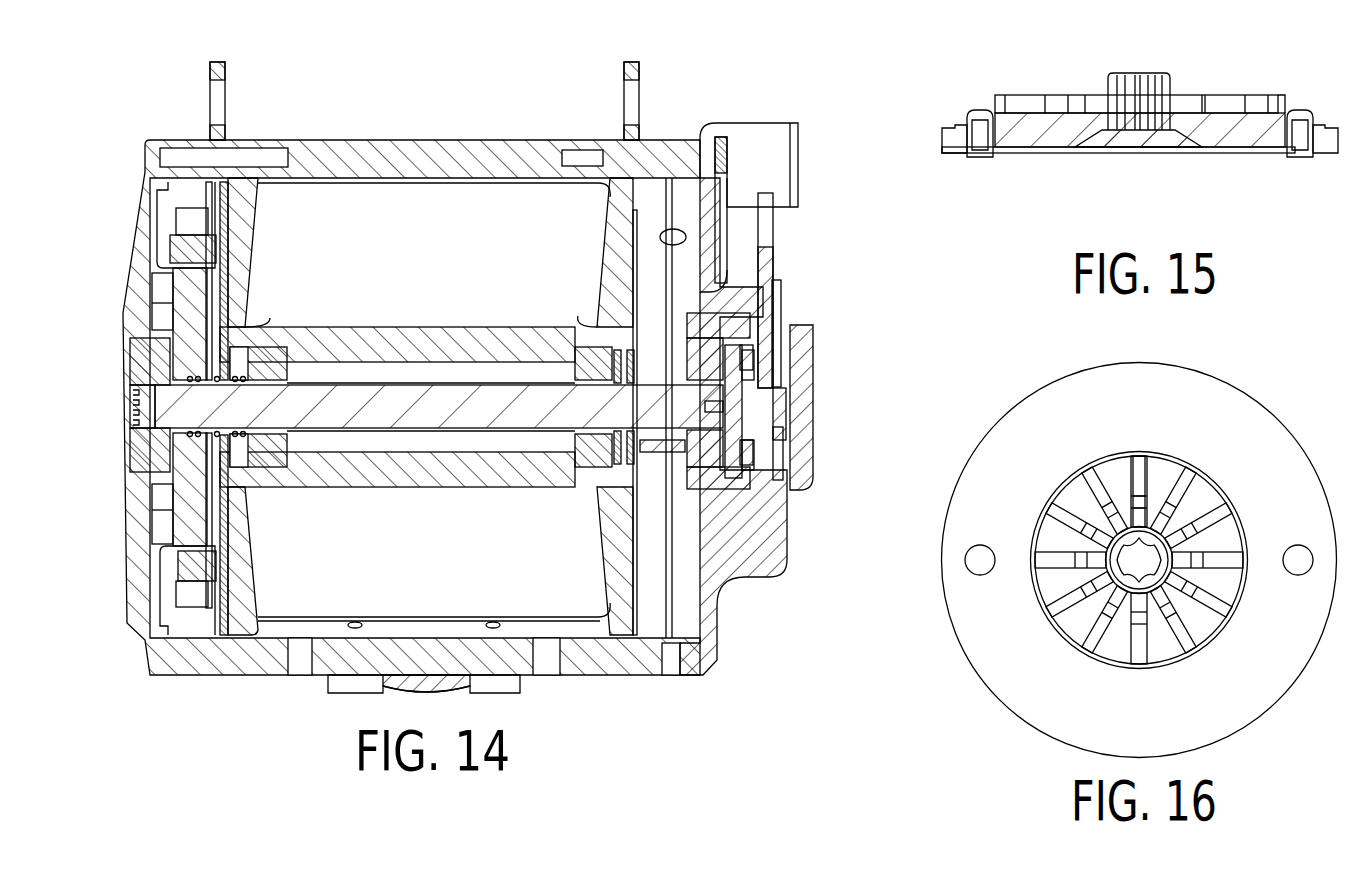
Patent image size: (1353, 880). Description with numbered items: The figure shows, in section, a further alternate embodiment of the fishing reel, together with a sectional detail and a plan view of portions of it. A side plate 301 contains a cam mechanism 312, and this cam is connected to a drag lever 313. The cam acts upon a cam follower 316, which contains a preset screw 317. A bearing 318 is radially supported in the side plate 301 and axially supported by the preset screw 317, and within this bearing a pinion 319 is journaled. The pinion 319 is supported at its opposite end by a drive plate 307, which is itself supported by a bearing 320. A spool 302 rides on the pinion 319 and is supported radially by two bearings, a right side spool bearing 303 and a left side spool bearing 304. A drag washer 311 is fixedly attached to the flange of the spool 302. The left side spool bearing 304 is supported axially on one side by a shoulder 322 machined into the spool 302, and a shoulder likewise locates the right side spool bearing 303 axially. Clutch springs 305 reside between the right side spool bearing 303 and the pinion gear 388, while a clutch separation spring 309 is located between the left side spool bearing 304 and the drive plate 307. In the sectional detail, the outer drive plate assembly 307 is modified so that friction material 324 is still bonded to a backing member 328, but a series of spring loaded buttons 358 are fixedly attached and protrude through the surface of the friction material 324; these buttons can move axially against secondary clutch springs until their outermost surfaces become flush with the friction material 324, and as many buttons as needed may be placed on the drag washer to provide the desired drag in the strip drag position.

In FIG. 14, the side plate 301 is at (717, 612).
In FIG. 14, the spool 302 is at (420, 327).
In FIG. 14, the right side spool bearing 303 is at (590, 347).
In FIG. 14, the left side spool bearing 304 is at (245, 340).
In FIG. 14, the clutch springs 305 is at (627, 357).
In FIG. 14, the drive plate 307 is at (158, 266).
In FIG. 15, the drive plate 307 is at (1283, 97).
In FIG. 14, the clutch separation spring 309 is at (234, 437).
In FIG. 14, the drag washer 311 is at (226, 248).
In FIG. 14, the cam mechanism 312 is at (747, 330).
In FIG. 14, the drag lever 313 is at (775, 233).
In FIG. 14, the cam follower 316 is at (703, 330).
In FIG. 14, the preset screw 317 is at (742, 353).
In FIG. 14, the bearing 318 is at (710, 470).
In FIG. 14, the pinion 319 is at (487, 430).
In FIG. 15, the pinion 319 is at (993, 125).
In FIG. 14, the bearing 320 is at (150, 338).
In FIG. 14, the shoulder 322 is at (287, 353).
In FIG. 14, the friction material 324 is at (210, 285).
In FIG. 15, the friction material 324 is at (1258, 152).
In FIG. 15, the backing member 328 is at (1222, 130).
In FIG. 14, the spring loaded buttons 358 is at (216, 262).
In FIG. 15, the spring loaded buttons 358 is at (982, 160).
In FIG. 14, the pinion gear 388 is at (667, 445).